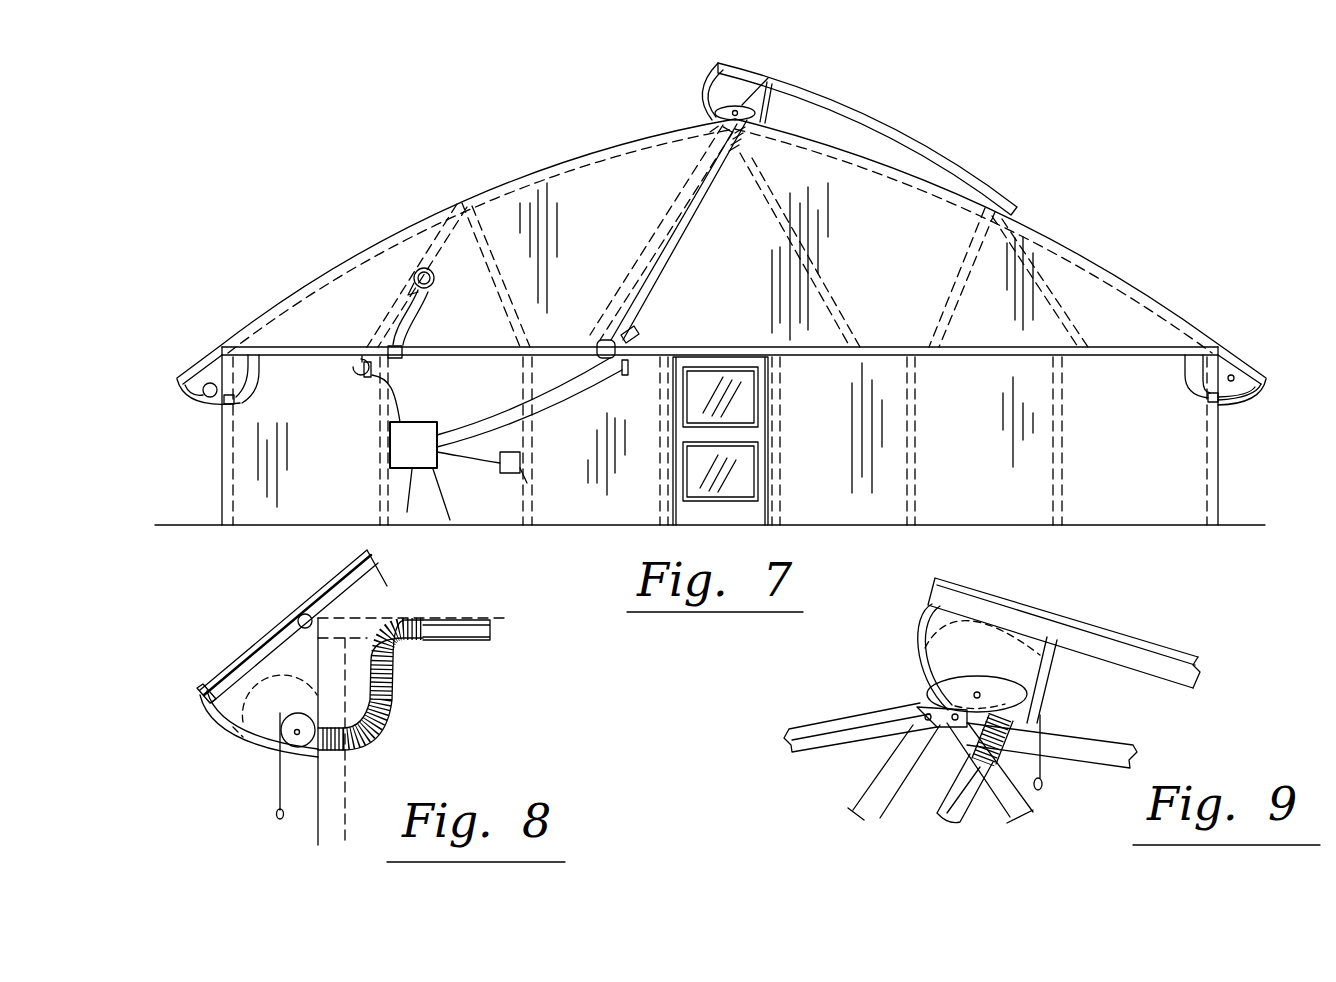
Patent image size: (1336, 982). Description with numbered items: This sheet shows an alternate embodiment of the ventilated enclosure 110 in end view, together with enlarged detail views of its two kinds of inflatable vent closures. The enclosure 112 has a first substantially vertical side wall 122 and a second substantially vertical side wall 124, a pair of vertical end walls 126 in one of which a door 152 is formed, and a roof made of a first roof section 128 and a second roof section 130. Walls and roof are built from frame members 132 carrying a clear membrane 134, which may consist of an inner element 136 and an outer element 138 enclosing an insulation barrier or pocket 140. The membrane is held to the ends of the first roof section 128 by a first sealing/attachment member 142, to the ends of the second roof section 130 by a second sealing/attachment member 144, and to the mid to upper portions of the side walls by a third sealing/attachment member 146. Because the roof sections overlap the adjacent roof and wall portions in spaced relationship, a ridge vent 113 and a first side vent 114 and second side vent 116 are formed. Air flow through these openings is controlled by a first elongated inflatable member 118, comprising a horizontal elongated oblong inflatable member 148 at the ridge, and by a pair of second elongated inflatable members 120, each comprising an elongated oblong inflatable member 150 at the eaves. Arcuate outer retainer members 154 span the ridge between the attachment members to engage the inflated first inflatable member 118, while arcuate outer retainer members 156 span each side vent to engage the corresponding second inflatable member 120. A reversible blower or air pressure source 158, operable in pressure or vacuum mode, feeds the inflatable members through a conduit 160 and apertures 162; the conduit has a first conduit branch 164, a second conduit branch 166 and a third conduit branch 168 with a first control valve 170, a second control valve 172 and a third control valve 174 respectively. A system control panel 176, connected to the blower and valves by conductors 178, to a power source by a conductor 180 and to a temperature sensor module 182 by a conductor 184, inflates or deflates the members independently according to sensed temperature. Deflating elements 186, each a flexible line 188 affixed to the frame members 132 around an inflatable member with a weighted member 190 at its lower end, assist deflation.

In FIG. 7, the ventilated enclosure 110 is at (353, 187).
In FIG. 7, the enclosure 112 is at (1165, 282).
In FIG. 7, the ridge vent 113 is at (725, 88).
In FIG. 9, the ridge vent 113 is at (1070, 658).
In FIG. 7, the first side vent 114 is at (1226, 346).
In FIG. 8, the first side vent 114 is at (305, 648).
In FIG. 7, the second side vent 116 is at (214, 350).
In FIG. 7, the first elongated inflatable member 118 is at (705, 118).
In FIG. 9, the first elongated inflatable member 118 is at (943, 665).
In FIG. 7, the second elongated inflatable member 120 is at (198, 368).
In FIG. 8, the second elongated inflatable member 120 is at (266, 731).
In FIG. 7, the first substantially vertical side wall 122 is at (200, 461).
In FIG. 7, the second substantially vertical side wall 124 is at (1230, 478).
In FIG. 7, the vertical end wall 126 is at (1090, 487).
In FIG. 7, the first roof section 128 is at (990, 168).
In FIG. 9, the first roof section 128 is at (1105, 608).
In FIG. 7, the second roof section 130 is at (302, 250).
In FIG. 8, the second roof section 130 is at (345, 554).
In FIG. 7, the frame members 132 is at (535, 165).
In FIG. 7, the clear membrane 134 is at (1073, 268).
In FIG. 8, the inner element 136 is at (312, 590).
In FIG. 8, the outer element 138 is at (248, 645).
In FIG. 8, the insulation barrier or pocket 140 is at (228, 658).
In FIG. 9, the first sealing/attachment member 142 is at (937, 582).
In FIG. 8, the second sealing/attachment member 144 is at (197, 693).
In FIG. 8, the third sealing/attachment member 146 is at (323, 760).
In FIG. 7, the horizontal elongated oblong inflatable member 148 is at (770, 90).
In FIG. 7, the elongated oblong inflatable member 150 is at (203, 400).
In FIG. 7, the door 152 is at (760, 432).
In FIG. 7, the arcuate outer retainer member 154 is at (712, 98).
In FIG. 9, the arcuate outer retainer member 154 is at (913, 682).
In FIG. 7, the arcuate outer retainer member 156 is at (183, 385).
In FIG. 8, the arcuate outer retainer member 156 is at (227, 730).
In FIG. 7, the reversible blower or air pressure source 158 is at (430, 281).
In FIG. 7, the conduit 160 is at (430, 346).
In FIG. 7, the apertures 162 is at (234, 400).
In FIG. 8, the apertures 162 is at (344, 754).
In FIG. 9, the apertures 162 is at (977, 694).
In FIG. 7, the first conduit branch 164 is at (260, 372).
In FIG. 8, the first conduit branch 164 is at (397, 687).
In FIG. 9, the first conduit branch 164 is at (975, 769).
In FIG. 7, the second conduit branch 166 is at (1190, 386).
In FIG. 7, the third conduit branch 168 is at (748, 139).
In FIG. 7, the first control valve 170 is at (365, 344).
In FIG. 7, the second control valve 172 is at (636, 346).
In FIG. 7, the third control valve 174 is at (635, 331).
In FIG. 7, the system control panel 176 is at (450, 521).
In FIG. 7, the conductors 178 is at (397, 395).
In FIG. 7, the conductor 180 is at (408, 528).
In FIG. 7, the sensor module 182 is at (528, 476).
In FIG. 7, the conductor 184 is at (466, 462).
In FIG. 8, the deflating element 186 is at (256, 805).
In FIG. 9, the deflating element 186 is at (1087, 722).
In FIG. 8, the flexible line 188 is at (280, 780).
In FIG. 9, the flexible line 188 is at (1043, 716).
In FIG. 8, the weighted member 190 is at (277, 814).
In FIG. 9, the weighted member 190 is at (1043, 783).